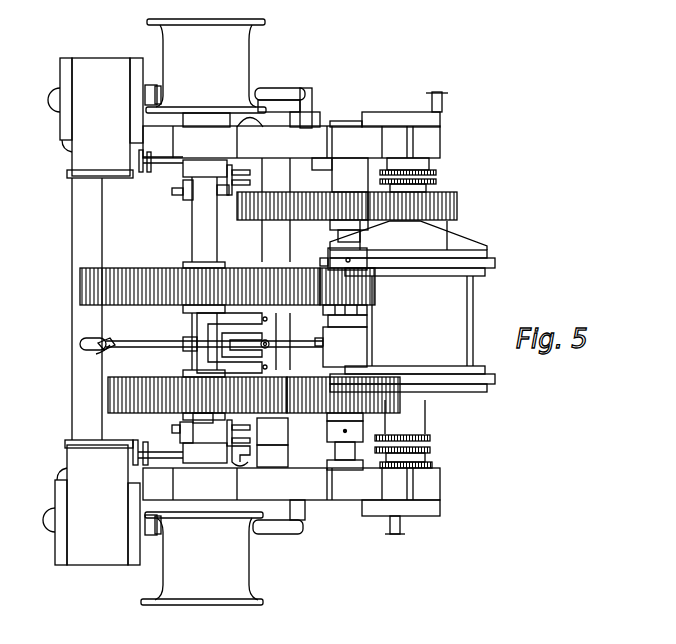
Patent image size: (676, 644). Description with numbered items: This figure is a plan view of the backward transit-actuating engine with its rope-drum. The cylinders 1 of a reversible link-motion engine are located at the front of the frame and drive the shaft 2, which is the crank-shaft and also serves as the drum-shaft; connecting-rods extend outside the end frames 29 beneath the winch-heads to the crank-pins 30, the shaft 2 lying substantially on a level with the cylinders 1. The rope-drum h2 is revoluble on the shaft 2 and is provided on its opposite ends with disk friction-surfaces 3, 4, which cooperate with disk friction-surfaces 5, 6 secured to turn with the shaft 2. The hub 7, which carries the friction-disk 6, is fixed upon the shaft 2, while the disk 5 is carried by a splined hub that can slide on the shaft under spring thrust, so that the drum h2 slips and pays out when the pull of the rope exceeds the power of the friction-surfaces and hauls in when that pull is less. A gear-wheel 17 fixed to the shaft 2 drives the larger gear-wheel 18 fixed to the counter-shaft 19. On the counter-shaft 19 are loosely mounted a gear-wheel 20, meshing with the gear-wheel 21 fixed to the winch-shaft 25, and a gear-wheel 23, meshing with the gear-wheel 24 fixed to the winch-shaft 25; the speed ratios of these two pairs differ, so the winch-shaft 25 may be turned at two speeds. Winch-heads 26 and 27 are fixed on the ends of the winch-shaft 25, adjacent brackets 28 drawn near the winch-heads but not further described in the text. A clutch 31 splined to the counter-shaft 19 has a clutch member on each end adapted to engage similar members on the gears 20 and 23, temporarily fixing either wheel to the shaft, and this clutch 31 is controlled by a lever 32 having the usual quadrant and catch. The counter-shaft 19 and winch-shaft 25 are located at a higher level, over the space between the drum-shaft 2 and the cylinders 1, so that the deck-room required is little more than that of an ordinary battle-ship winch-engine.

The cylinders 1 is at (93, 311).
The shaft 2 is at (428, 433).
The disk friction-surface 3 is at (495, 372).
The disk friction-surface 4 is at (494, 266).
The disk friction-surface 5 is at (487, 391).
The disk friction-surface 6 is at (488, 256).
The hub 7 is at (408, 236).
The gear-wheel 17 is at (455, 215).
The gear-wheel 18 is at (340, 212).
The counter-shaft 19 is at (350, 178).
The gear-wheel 20 is at (374, 293).
The gear-wheel 21 is at (158, 282).
The gear-wheel 23 is at (326, 406).
The gear-wheel 24 is at (158, 404).
The winch-shaft 25 is at (198, 440).
The winch-head 26 is at (205, 73).
The winch-head 27 is at (202, 558).
The bracket 28 is at (277, 98).
The end frames 29 is at (291, 313).
The crank-pins 30 is at (389, 319).
The clutch 31 is at (366, 338).
The lever 32 is at (131, 346).
The rope-drum h2 is at (422, 321).